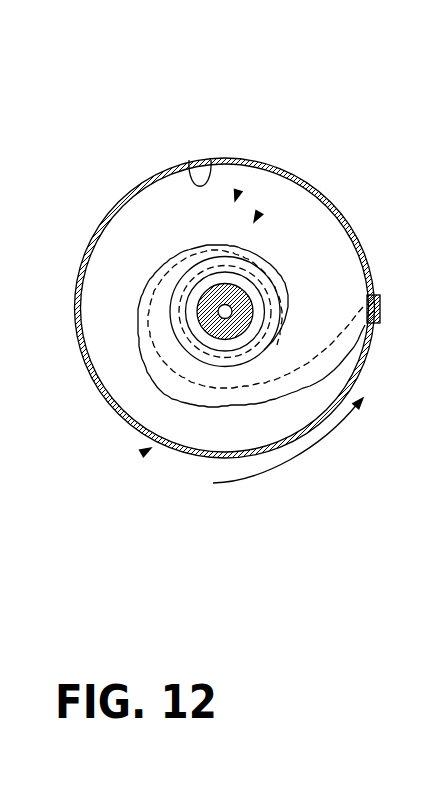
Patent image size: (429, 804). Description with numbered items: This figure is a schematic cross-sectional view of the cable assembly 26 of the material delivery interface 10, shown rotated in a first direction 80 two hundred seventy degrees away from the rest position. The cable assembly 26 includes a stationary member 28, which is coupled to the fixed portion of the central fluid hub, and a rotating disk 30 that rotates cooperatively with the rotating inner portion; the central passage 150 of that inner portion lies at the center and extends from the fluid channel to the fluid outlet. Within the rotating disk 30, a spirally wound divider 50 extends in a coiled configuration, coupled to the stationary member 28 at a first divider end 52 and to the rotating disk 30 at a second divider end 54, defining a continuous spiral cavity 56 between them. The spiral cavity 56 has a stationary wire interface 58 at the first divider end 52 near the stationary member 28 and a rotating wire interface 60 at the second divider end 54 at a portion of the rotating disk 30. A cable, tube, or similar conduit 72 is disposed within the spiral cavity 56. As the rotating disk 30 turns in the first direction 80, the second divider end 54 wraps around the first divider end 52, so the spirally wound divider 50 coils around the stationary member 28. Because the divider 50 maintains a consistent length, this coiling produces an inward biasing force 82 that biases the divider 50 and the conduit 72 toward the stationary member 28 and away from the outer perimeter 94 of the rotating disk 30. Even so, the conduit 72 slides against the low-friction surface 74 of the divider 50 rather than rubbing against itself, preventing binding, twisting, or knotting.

The material delivery interface 10 is at (288, 92).
The cable assembly 26 is at (324, 148).
The stationary member 28 is at (222, 282).
The rotating disk 30 is at (147, 450).
The spirally wound divider 50 is at (203, 398).
The first divider end 52 is at (217, 281).
The second divider end 54 is at (363, 338).
The continuous spiral cavity 56 is at (237, 195).
The stationary wire interface 58 is at (249, 280).
The rotating wire interface 60 is at (378, 288).
The conduit 72 is at (281, 380).
The low-friction surface 74 is at (230, 253).
The first direction 80 is at (284, 469).
The inward biasing force 82 is at (256, 218).
The outer perimeter 94 is at (237, 283).
The central passage 150 is at (222, 314).